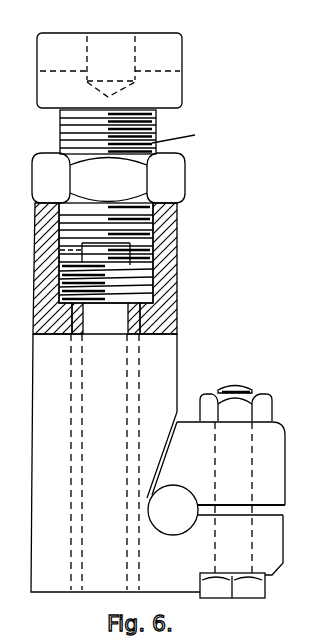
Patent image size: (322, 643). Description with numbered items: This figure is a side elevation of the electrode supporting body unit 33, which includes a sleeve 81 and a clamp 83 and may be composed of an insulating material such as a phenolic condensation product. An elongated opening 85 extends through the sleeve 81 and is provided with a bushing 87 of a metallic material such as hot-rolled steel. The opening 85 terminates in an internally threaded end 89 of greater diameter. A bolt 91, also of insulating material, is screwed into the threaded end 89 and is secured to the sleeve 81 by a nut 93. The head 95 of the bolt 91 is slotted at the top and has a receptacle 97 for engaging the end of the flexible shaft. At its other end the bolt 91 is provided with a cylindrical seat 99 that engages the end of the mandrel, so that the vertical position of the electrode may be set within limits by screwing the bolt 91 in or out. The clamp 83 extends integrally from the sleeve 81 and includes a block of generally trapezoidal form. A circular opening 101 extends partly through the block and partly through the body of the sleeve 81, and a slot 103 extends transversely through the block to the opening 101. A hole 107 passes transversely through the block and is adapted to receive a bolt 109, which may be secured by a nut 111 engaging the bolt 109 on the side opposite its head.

The body unit 33 is at (224, 359).
The sleeve 81 is at (197, 258).
The clamp 83 is at (224, 620).
The elongated opening 85 is at (130, 331).
The bushing 87 is at (83, 322).
The internally threaded end 89 is at (160, 216).
The bolt 91 is at (156, 110).
The nut 93 is at (34, 166).
The head 95 is at (177, 57).
The receptacle 97 is at (125, 47).
The cylindrical seat 99 is at (60, 250).
The circular opening 101 is at (186, 479).
The slot 103 is at (283, 509).
The hole 107 is at (283, 546).
The bolt 109 is at (240, 385).
The nut 111 is at (266, 405).